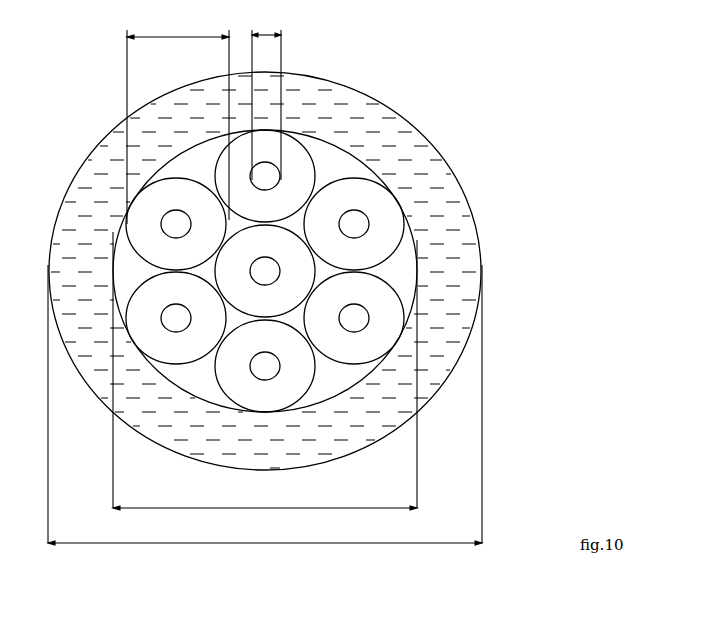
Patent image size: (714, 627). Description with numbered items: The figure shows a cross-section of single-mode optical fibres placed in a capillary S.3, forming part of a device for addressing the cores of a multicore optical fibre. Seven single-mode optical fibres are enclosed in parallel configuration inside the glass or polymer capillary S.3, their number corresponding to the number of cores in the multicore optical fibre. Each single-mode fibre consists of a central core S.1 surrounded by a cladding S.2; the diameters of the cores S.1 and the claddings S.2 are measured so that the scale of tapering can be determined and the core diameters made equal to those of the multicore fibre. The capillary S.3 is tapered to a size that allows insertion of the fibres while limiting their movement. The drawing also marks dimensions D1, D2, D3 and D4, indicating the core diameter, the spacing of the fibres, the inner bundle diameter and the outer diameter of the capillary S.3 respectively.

The core S.1 is at (353, 226).
The cladding S.2 is at (352, 197).
The capillary S.3 is at (443, 247).
The core diameter D1 is at (266, 100).
The fiber spacing dimension D2 is at (178, 123).
The inner bundle diameter D3 is at (265, 371).
The outer cable diameter D4 is at (265, 405).